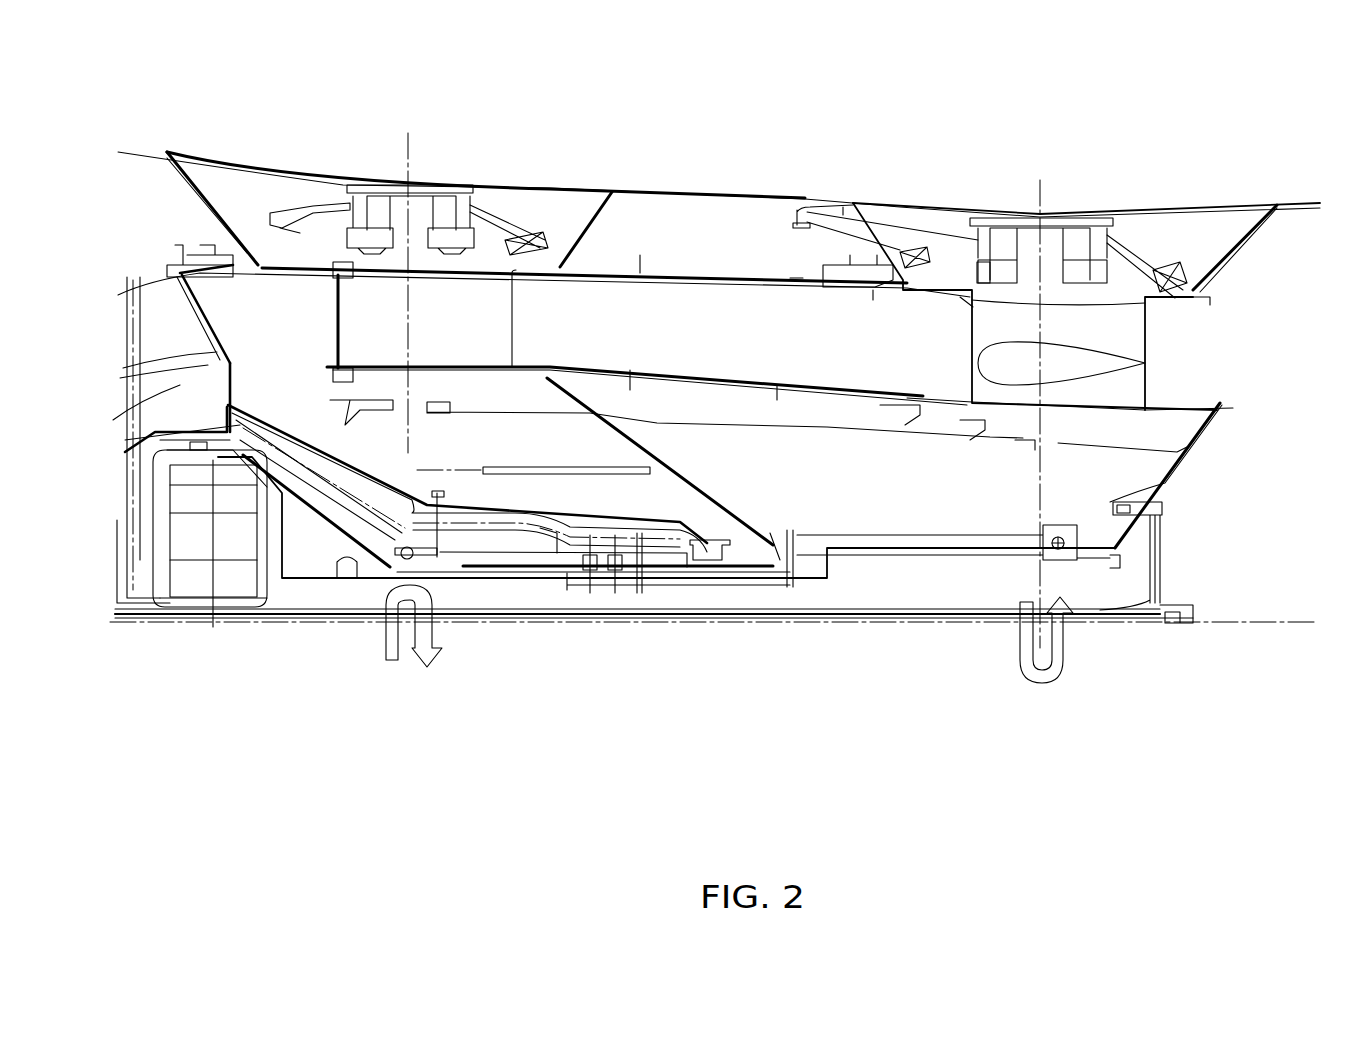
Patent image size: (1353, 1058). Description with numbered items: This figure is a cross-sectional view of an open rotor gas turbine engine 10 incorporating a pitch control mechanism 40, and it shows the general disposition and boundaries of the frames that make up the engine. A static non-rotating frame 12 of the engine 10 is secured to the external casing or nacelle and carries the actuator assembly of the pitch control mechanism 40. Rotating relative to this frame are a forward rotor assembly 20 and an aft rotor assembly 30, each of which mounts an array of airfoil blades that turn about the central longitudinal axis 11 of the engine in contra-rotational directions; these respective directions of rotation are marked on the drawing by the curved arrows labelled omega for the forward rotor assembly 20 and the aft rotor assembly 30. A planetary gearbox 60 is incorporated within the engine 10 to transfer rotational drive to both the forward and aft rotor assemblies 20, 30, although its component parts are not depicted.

The open rotor gas turbine engine 10 is at (503, 116).
The pitch control mechanism 40 is at (545, 220).
The static non-rotating frame 12 is at (212, 335).
The planetary gearbox 60 is at (226, 545).
The forward rotor assembly 20 is at (513, 566).
The aft rotor assembly 30 is at (478, 580).
The central longitudinal axis 11 is at (673, 622).